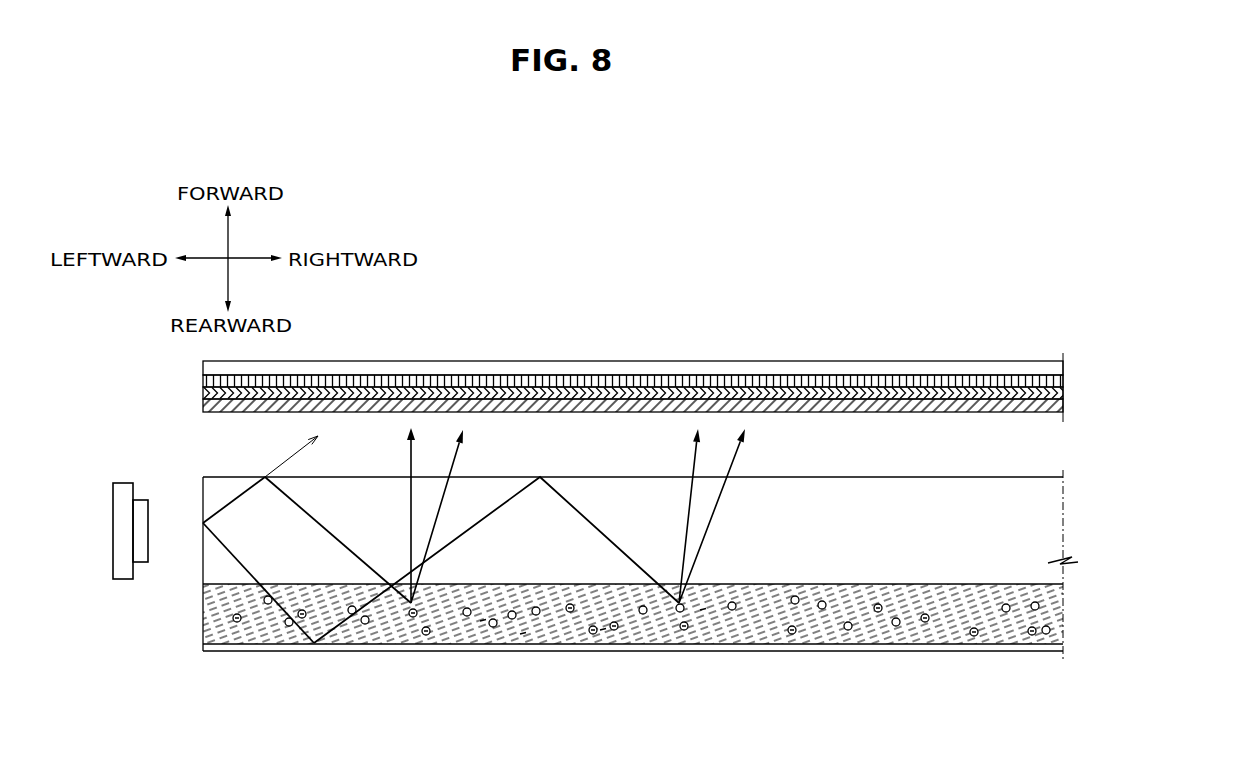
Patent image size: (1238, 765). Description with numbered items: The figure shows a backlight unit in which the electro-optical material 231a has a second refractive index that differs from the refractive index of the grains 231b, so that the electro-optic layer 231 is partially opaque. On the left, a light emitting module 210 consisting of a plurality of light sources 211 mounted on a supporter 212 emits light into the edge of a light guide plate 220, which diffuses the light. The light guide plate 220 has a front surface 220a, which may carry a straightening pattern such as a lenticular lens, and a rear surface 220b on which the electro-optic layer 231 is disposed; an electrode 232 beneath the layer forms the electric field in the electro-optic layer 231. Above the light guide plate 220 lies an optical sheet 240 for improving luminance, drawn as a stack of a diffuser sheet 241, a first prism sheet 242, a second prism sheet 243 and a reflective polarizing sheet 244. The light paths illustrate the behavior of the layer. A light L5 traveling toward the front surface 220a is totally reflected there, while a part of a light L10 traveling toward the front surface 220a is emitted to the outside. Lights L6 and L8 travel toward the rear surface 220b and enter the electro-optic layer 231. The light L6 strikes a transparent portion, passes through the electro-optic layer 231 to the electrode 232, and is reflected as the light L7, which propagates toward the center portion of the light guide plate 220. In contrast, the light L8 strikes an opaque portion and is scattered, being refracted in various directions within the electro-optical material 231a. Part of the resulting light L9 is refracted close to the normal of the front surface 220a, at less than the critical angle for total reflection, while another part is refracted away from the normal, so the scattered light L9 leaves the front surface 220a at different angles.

The optical sheet 240 is at (696, 380).
The reflective polarizing sheet 244 is at (1066, 366).
The second prism sheet 243 is at (1066, 380).
The first prism sheet 242 is at (1066, 392).
The diffuser sheet 241 is at (665, 413).
The light guide plate 220 is at (677, 576).
The front surface of the light guide plate 220a is at (1045, 477).
The rear surface of the light guide plate 220b is at (1050, 584).
The electro-optic layer 231 is at (668, 640).
The electro-optical material 231a is at (667, 635).
The grains 231b is at (607, 628).
The electrode 232 is at (1058, 648).
The light emitting module 210 is at (117, 582).
The light sources 211 is at (141, 563).
The supporter 212 is at (113, 573).
The light L5 is at (235, 498).
The light L6 is at (242, 565).
The light L7 is at (487, 516).
The light L8 is at (330, 533).
The light L9 is at (455, 467).
The light L10 is at (290, 458).